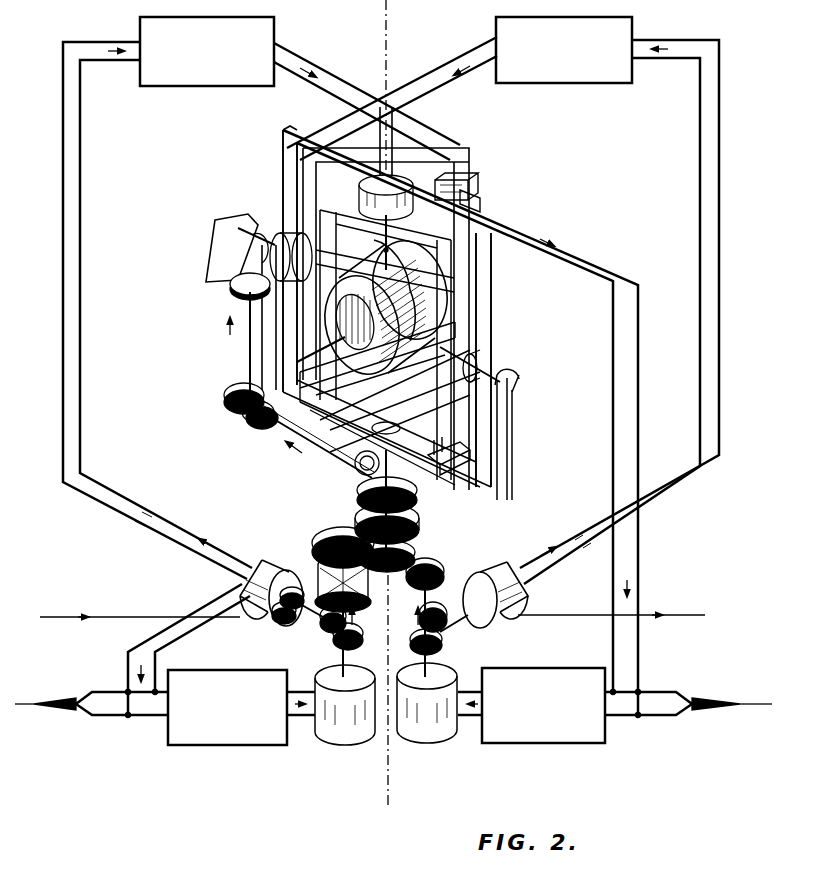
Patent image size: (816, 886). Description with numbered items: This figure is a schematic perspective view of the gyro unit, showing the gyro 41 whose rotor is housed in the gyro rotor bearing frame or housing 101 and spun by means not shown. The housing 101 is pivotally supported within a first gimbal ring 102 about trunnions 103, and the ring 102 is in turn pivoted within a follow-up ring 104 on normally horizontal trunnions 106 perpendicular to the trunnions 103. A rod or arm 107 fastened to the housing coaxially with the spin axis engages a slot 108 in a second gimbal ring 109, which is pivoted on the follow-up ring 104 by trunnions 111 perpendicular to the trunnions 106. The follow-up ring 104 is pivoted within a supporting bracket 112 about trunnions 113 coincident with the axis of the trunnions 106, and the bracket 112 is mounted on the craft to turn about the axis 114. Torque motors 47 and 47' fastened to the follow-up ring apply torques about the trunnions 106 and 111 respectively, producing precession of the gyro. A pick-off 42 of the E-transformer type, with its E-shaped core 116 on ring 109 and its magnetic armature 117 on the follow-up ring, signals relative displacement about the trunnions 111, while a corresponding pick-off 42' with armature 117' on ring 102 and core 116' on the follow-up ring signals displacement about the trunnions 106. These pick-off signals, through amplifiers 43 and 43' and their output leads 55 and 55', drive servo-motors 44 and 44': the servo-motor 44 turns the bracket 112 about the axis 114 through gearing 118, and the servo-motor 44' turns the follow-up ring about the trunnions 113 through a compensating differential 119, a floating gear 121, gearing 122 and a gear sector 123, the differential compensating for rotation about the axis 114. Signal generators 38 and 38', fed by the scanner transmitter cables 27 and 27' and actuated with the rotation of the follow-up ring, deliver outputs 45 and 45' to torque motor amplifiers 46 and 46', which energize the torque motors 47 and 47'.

The axis 114 is at (388, 28).
The torque motor amplifier 46' is at (207, 63).
The torque motor amplifier 46 is at (564, 62).
The signal generator output 45' is at (261, 310).
The signal generator output 45 is at (503, 310).
The gyro 41 is at (440, 308).
The follow-up ring 104 is at (491, 330).
The first gimbal ring 102 is at (400, 256).
The trunnions 103 is at (385, 283).
The gyro rotor bearing frame or housing 101 is at (340, 365).
The slot 108 is at (348, 390).
The torque motor 47' is at (401, 188).
The trunnions 111 is at (359, 204).
The pick-off device 42 is at (471, 177).
The magnetic armature 117 is at (378, 313).
The E-shaped core 116 is at (489, 197).
The trunnions 106 is at (312, 245).
The trunnions 113 is at (232, 212).
The supporting bracket 112 is at (512, 414).
The gear sector 123 is at (230, 290).
The torque motor 47 is at (225, 343).
The gearing 122 is at (240, 418).
The rod or arm 107 is at (290, 442).
The second gimbal ring 109 is at (312, 468).
The pick-off 42' is at (484, 451).
The armature 117' is at (457, 435).
The core 116' is at (406, 479).
The floating gear 121 is at (420, 522).
The compensating differential 119 is at (312, 545).
The gearing 118 is at (430, 572).
The signal generator 38' is at (244, 593).
The signal generator 38 is at (495, 578).
The output lead 27' is at (140, 604).
The output cable 27 is at (611, 628).
The amplifier 43' is at (241, 720).
The amplifier 43 is at (531, 718).
The servo-motor 44' is at (345, 718).
The servo-motor 44 is at (427, 716).
The output lead 55' is at (91, 716).
The output lead 55 is at (688, 713).